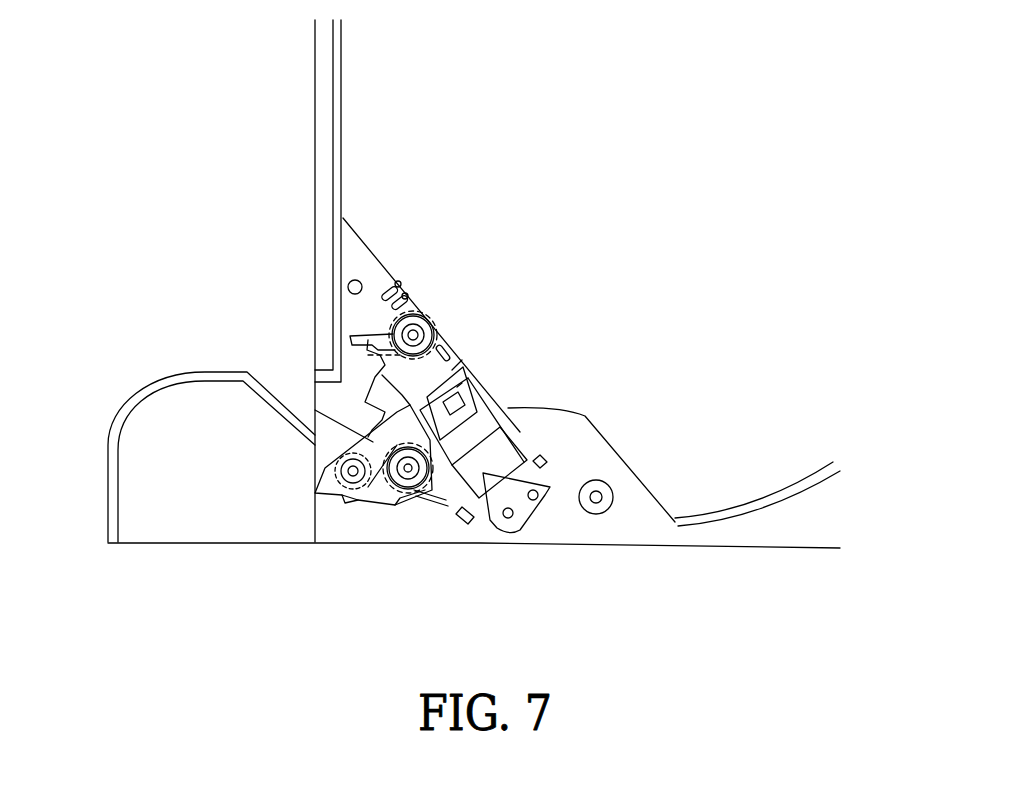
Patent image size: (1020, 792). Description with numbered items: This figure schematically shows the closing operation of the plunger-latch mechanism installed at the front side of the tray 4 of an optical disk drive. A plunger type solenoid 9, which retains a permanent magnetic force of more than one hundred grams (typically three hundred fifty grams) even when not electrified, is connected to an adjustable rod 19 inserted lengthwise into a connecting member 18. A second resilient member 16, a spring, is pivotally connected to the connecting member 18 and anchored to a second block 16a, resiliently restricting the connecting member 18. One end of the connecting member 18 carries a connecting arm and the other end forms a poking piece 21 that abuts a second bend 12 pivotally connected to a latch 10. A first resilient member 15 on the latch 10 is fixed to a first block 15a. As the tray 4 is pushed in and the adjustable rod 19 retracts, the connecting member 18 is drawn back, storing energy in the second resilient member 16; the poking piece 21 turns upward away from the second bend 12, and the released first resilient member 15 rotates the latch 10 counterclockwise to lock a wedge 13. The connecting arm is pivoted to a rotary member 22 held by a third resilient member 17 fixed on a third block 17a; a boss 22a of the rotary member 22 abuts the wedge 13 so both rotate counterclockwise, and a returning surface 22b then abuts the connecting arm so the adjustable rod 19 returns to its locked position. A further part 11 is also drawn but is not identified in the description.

The tray 4 is at (107, 452).
The plunger type solenoid 9 is at (488, 490).
The latch 10 is at (402, 400).
The arm 11 is at (337, 498).
The second bend 12 is at (368, 500).
The wedge 13 is at (348, 287).
The first resilient member 15 is at (458, 382).
The first block 15a is at (330, 415).
The second resilient member 16 is at (427, 492).
The second block 16a is at (425, 510).
The third resilient member 17 is at (407, 308).
The third block 17a is at (395, 307).
The connecting member 18 is at (488, 405).
The adjustable rod 19 is at (508, 410).
The poking piece 21 is at (402, 498).
The rotary member 22 is at (370, 330).
The boss 22a is at (360, 336).
The returning surface 22b is at (437, 347).